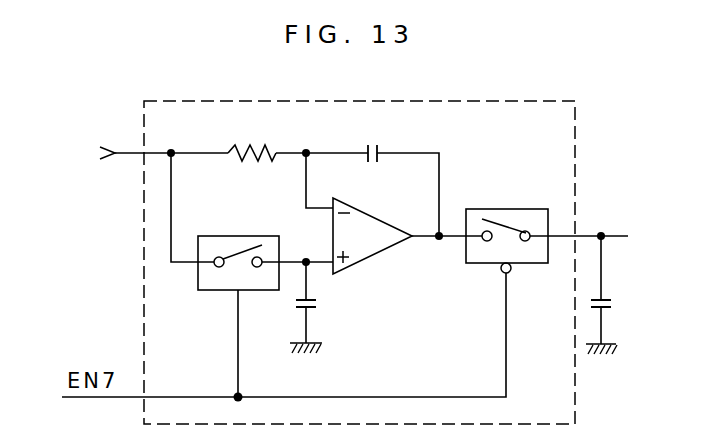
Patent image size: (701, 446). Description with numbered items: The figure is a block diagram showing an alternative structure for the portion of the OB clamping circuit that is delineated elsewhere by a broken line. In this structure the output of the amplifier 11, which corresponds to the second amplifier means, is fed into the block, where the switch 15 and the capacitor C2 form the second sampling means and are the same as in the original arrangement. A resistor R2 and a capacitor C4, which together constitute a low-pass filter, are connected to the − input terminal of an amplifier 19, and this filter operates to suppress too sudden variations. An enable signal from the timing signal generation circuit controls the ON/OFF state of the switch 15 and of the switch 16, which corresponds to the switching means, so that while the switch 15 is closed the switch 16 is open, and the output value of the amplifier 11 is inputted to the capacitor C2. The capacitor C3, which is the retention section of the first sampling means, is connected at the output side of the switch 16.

The amplifier 11 is at (77, 153).
The switch 15 is at (224, 236).
The switch 16 is at (520, 208).
The amplifier 19 is at (372, 257).
The resistor R2 is at (252, 139).
The capacitor C2 is at (328, 324).
The capacitor C3 is at (623, 324).
The capacitor C4 is at (377, 139).